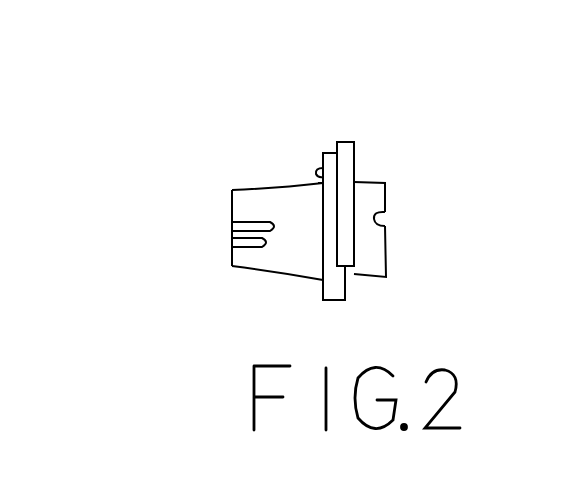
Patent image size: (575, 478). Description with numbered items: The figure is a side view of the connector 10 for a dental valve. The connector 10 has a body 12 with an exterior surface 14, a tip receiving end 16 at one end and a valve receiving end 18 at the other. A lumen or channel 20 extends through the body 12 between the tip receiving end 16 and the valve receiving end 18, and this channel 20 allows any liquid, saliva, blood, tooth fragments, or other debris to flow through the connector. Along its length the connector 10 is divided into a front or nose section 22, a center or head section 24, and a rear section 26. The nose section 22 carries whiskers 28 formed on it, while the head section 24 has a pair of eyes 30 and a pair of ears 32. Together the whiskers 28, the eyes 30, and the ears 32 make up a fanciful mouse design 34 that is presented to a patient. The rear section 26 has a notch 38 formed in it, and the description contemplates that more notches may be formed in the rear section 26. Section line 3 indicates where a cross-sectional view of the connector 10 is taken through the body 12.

The connector 10 is at (323, 106).
The body 12 is at (221, 300).
The exterior surface 14 is at (302, 254).
The tip receiving end 16 is at (188, 214).
The valve receiving end 18 is at (412, 253).
The channel 20 is at (231, 253).
The nose section 22 is at (280, 262).
The head section 24 is at (332, 292).
The rear section 26 is at (372, 268).
The whiskers 28 is at (251, 224).
The pair of eyes 30 is at (317, 169).
The pair of ears 32 is at (346, 150).
The fanciful mouse design 34 is at (264, 157).
The notch 38 is at (388, 218).
The section line 3- 3 is at (93, 214).